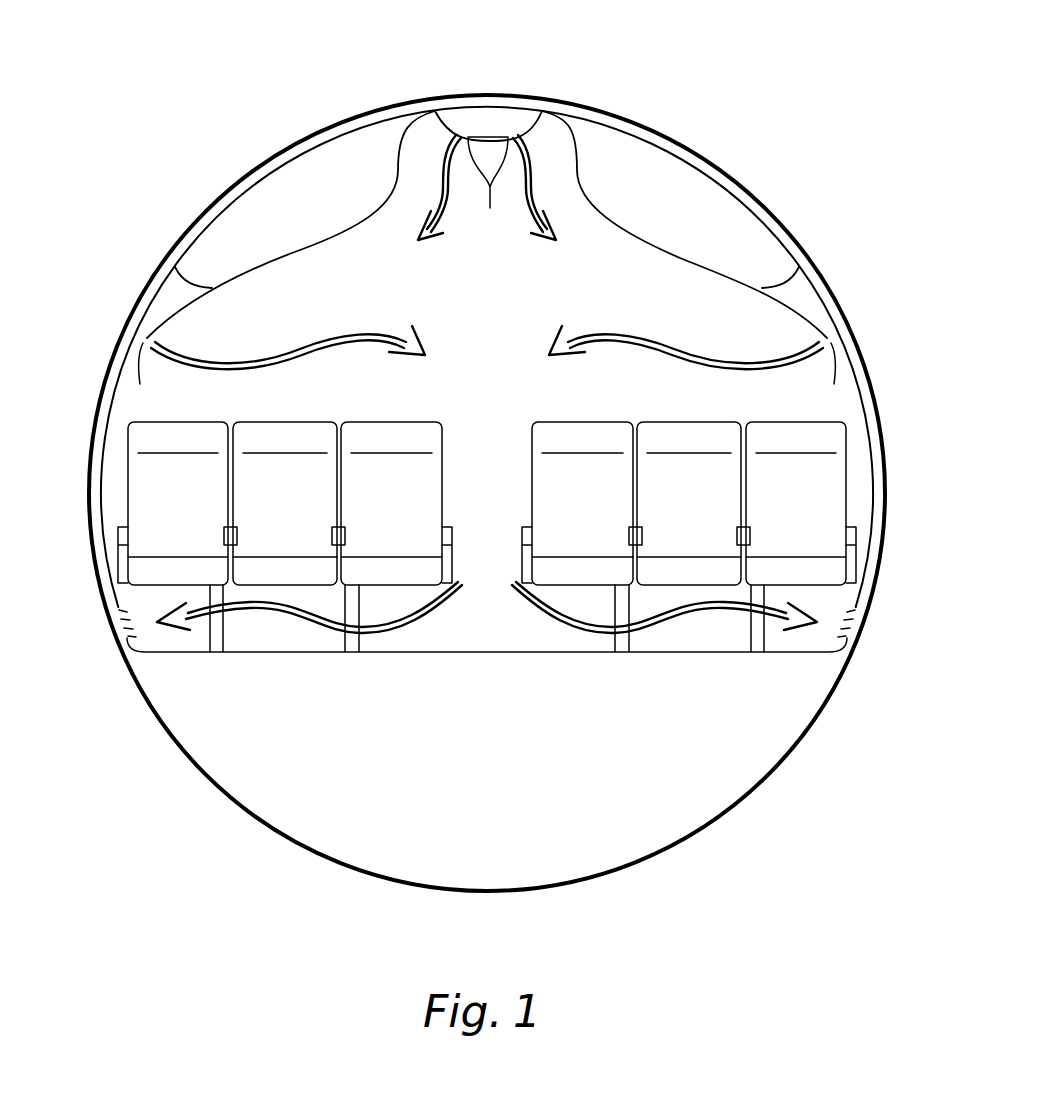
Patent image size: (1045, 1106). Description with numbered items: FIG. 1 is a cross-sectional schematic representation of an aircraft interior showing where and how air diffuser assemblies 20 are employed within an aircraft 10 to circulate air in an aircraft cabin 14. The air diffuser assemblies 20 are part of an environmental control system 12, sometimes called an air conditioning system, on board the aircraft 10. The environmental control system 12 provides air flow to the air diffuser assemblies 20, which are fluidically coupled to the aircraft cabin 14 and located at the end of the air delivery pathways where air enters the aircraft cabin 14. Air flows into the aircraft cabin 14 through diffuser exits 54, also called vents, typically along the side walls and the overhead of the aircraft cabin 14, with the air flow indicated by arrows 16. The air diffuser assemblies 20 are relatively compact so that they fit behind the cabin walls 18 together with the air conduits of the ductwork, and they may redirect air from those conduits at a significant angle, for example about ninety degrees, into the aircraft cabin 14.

The aircraft 10 is at (172, 58).
The environmental control system 12 is at (157, 182).
The aircraft cabin 14 is at (632, 277).
The arrows 16 is at (446, 196).
The cabin walls 18 is at (446, 127).
The air diffuser assemblies 20 is at (490, 128).
The diffuser exits 54 is at (812, 398).